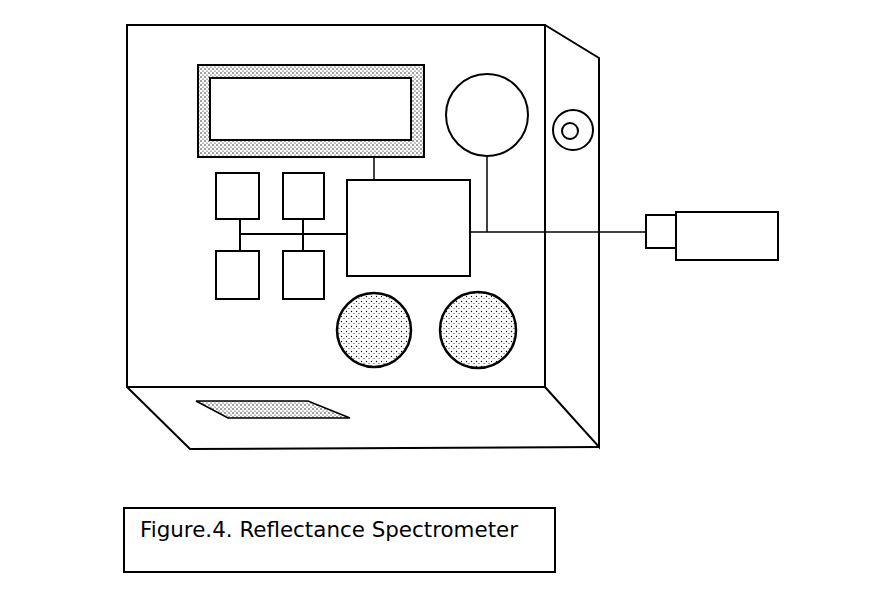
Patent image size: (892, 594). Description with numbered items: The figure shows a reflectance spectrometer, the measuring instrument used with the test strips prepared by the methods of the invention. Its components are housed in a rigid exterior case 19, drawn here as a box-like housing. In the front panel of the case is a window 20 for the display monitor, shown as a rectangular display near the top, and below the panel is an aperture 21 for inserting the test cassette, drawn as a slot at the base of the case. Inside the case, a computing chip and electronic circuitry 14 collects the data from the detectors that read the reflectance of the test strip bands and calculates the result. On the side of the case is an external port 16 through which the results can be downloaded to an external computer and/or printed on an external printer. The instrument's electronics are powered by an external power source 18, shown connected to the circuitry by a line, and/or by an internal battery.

The computing chip and electronic circuitry 14 is at (408, 228).
The external port to external computer and printer 16 is at (576, 123).
The external power source 18 is at (624, 236).
The rigid exterior case 19 is at (177, 324).
The window 20 is at (198, 81).
The aperture 21 is at (238, 403).